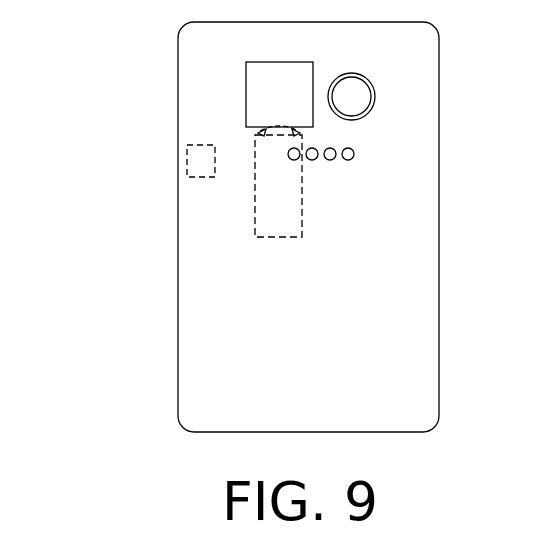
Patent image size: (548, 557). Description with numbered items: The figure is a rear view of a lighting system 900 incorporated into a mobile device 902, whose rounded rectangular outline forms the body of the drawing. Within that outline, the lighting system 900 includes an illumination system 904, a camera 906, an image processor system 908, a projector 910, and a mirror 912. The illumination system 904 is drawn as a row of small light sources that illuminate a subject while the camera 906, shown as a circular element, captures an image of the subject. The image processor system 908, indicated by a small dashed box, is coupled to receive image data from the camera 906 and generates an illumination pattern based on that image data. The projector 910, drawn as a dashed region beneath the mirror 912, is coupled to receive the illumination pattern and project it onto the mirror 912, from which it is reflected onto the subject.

The lighting system 900 is at (397, 142).
The mobile device 902 is at (105, 140).
The illumination system 904 is at (322, 206).
The camera 906 is at (352, 85).
The image processor system 908 is at (203, 157).
The projector 910 is at (253, 203).
The mirror 912 is at (267, 72).